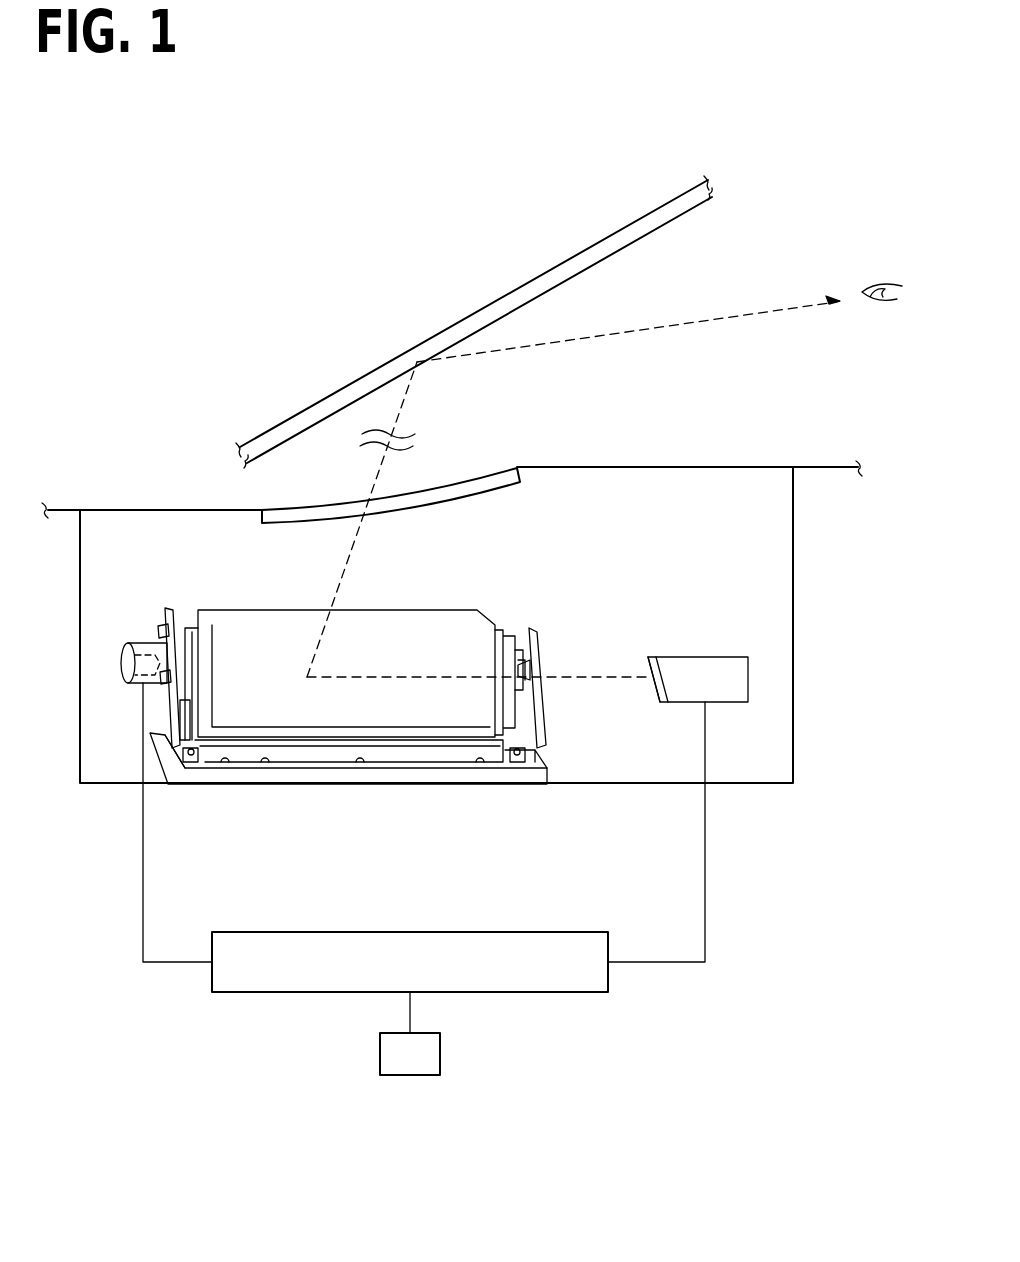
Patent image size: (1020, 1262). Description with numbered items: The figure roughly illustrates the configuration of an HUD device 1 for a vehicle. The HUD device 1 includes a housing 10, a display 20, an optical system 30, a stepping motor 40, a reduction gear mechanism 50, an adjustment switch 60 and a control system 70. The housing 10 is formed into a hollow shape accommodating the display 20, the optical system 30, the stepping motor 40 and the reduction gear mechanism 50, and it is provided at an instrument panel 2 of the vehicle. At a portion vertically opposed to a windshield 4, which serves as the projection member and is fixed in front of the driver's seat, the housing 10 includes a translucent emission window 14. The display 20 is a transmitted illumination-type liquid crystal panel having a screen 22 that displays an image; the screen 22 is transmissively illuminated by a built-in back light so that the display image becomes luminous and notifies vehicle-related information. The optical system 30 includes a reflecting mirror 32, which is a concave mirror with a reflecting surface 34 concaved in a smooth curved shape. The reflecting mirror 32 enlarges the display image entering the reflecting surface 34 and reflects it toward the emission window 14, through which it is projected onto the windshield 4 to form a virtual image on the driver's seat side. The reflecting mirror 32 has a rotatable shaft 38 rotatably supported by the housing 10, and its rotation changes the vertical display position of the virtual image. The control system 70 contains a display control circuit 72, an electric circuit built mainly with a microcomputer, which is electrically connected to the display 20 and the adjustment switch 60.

The HUD device 1 is at (821, 789).
The instrument panel 2 is at (828, 467).
The windshield 4 is at (617, 235).
The housing 10 is at (793, 535).
The emission window 14 is at (496, 478).
The display 20 is at (595, 772).
The screen 22 is at (648, 663).
The optical system 30 is at (338, 646).
The reflecting mirror 32 is at (385, 717).
The reflecting surface 34 is at (272, 711).
The rotatable shaft 38 is at (548, 657).
The stepping motor 40 is at (145, 647).
The reduction gear mechanism 50 is at (138, 678).
The adjustment switch 60 is at (440, 1053).
The control system 70 is at (413, 923).
The display control circuit 72 is at (576, 932).